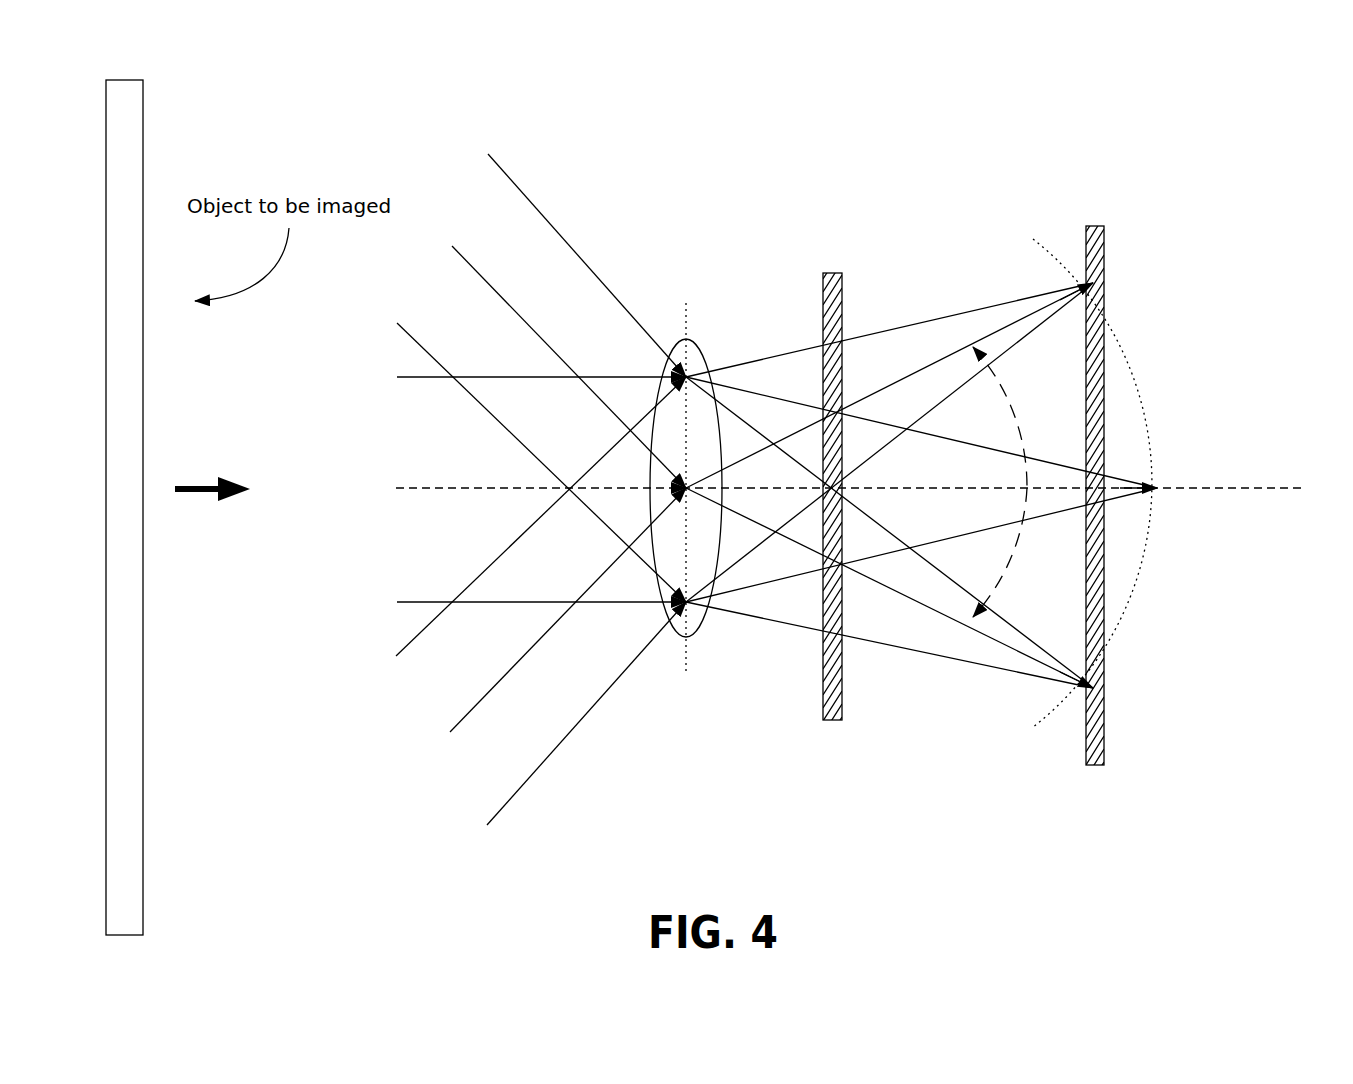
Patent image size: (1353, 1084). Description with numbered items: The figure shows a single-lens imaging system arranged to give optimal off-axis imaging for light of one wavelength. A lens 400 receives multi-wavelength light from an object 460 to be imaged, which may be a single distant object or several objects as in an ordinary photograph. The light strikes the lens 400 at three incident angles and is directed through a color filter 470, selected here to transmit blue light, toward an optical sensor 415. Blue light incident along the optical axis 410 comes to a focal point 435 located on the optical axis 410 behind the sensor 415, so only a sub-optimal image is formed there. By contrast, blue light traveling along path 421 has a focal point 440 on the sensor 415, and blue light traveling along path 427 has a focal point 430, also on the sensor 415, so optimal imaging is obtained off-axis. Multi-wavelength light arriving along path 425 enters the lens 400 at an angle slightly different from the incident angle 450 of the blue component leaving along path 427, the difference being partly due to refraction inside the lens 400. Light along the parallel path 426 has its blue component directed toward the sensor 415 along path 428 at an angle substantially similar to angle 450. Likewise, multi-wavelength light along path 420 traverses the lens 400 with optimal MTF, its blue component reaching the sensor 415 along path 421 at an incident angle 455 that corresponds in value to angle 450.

The lens 400 is at (692, 338).
The optical axis 410 is at (468, 488).
The optical sensor 415 is at (1097, 226).
The path 420 is at (508, 302).
The path 421 is at (890, 590).
The path 425 is at (488, 686).
The path 426 is at (550, 755).
The path 427 is at (867, 393).
The path 428 is at (977, 376).
The focal point 430 is at (1103, 268).
The focal point 435 is at (1160, 490).
The focal point 440 is at (1100, 700).
The incident angle 450 is at (1001, 379).
The incident angle 455 is at (998, 577).
The object 460 is at (125, 80).
The color filter 470 is at (832, 262).